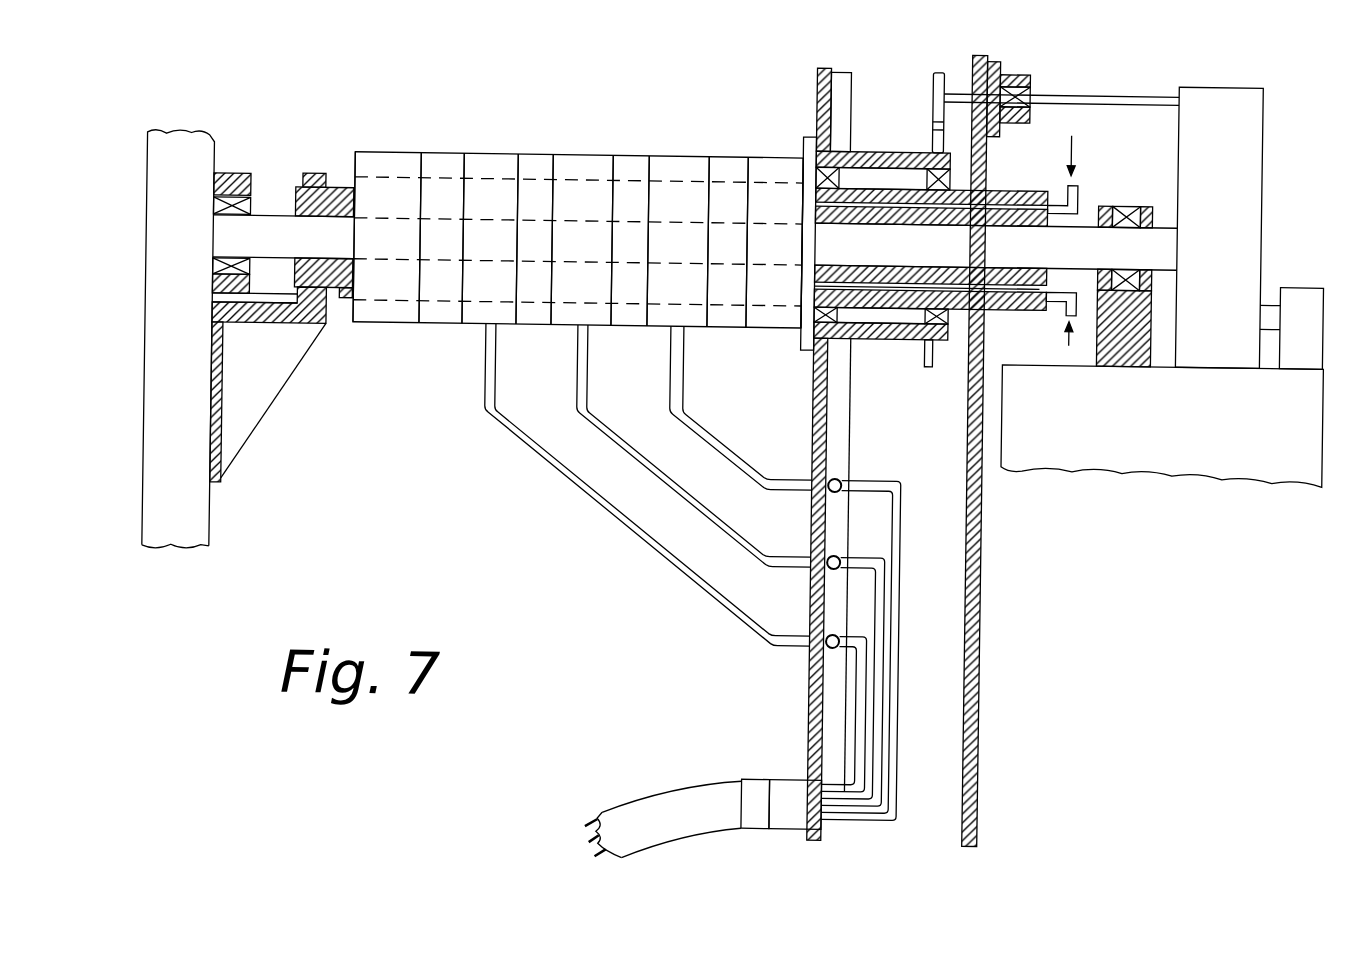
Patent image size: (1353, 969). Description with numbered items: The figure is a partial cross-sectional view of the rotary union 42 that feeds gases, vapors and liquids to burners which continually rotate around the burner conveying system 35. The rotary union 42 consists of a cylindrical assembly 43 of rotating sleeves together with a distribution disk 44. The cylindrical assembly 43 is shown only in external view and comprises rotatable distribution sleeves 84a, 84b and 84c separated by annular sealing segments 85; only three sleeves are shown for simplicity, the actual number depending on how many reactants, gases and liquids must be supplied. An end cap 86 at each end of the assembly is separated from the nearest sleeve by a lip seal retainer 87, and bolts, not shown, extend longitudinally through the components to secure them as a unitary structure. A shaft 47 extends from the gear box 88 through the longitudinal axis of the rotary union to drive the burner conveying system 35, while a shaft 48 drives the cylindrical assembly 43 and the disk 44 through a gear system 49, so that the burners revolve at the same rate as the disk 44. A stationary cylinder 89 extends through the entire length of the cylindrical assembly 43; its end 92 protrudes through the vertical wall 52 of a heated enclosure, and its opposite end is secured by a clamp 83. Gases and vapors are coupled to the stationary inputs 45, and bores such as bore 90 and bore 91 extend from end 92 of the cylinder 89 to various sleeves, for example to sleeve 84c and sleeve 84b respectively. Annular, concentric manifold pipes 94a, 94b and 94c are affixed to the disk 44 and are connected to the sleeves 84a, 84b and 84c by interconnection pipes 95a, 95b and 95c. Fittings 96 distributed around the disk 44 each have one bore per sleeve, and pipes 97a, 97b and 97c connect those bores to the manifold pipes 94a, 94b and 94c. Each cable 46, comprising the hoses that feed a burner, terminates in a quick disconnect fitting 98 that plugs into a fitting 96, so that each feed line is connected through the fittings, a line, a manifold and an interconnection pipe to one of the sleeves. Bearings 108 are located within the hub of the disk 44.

The burner conveying system 35 is at (222, 526).
The rotary union 42 is at (637, 503).
The cylindrical assembly 43 is at (428, 337).
The distribution disk 44 is at (815, 738).
The stationary inputs 45 is at (1079, 189).
The cable 46 is at (697, 789).
The shaft 47 is at (264, 260).
The shaft 48 is at (1101, 90).
The gear system 49 is at (924, 71).
The vertical wall 52 is at (986, 735).
The clamp 83 is at (314, 181).
The rotatable distribution sleeve 84a is at (491, 157).
The rotatable distribution sleeve 84b is at (580, 157).
The rotatable distribution sleeve 84c is at (674, 158).
The annular sealing segment 85 is at (535, 157).
The end cap 86 is at (384, 156).
The lip seal retainer 87 is at (439, 157).
The gear box 88 is at (1262, 166).
The stationary cylinder 89 is at (299, 197).
The bore 90 is at (1026, 197).
The bore 91 is at (931, 288).
The end of cylinder 92 is at (1060, 218).
The manifold pipe 94a is at (837, 651).
The manifold pipe 94b is at (839, 548).
The manifold pipe 94c is at (839, 475).
The interconnection pipe 95a is at (590, 493).
The interconnection pipe 95b is at (592, 368).
The interconnection pipe 95c is at (686, 376).
The fitting 96 is at (799, 829).
The pipe 97a is at (871, 697).
The pipe 97b is at (891, 598).
The pipe 97c is at (903, 500).
The quick disconnect fitting 98 is at (765, 830).
The bearings 108 is at (912, 312).